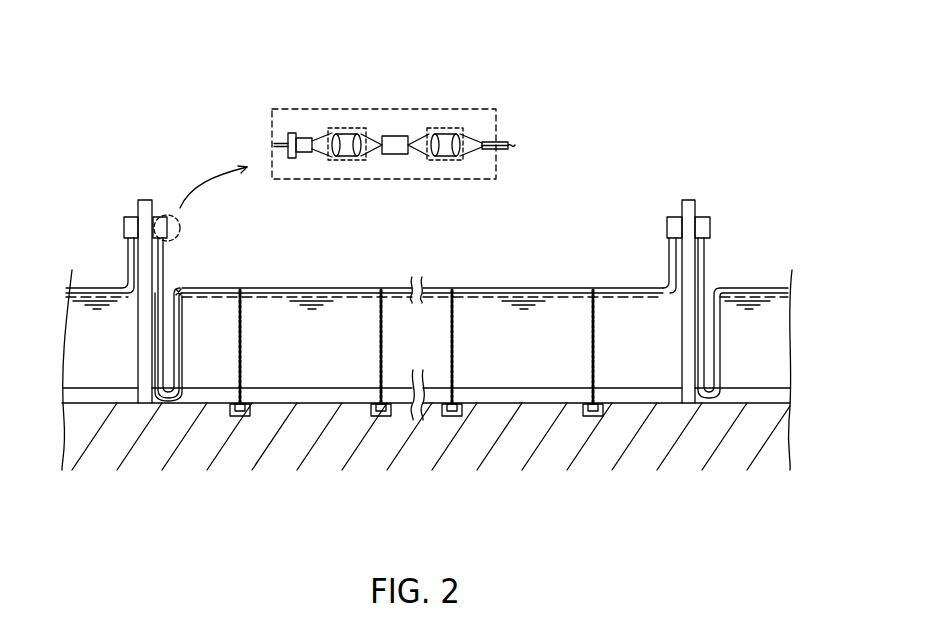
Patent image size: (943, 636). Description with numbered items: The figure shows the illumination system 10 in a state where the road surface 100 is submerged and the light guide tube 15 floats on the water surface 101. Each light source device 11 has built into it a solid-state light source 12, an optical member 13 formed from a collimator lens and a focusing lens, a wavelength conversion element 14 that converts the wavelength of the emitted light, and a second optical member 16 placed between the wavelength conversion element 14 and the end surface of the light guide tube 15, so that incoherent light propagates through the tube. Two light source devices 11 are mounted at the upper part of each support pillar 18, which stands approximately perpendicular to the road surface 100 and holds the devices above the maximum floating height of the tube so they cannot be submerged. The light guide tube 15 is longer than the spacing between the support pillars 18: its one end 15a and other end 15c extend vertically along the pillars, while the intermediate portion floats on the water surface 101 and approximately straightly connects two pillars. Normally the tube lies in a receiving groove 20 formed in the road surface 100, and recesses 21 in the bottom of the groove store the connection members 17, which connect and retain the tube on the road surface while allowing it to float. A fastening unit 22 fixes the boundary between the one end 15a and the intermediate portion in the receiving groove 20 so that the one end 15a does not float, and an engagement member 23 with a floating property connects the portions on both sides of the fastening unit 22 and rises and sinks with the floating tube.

The illumination system 10 is at (732, 73).
The light source device 11 is at (128, 217).
The solid-state light source 12 is at (307, 138).
The optical member 13 is at (348, 128).
The wavelength conversion element 14 is at (395, 136).
The light guide tube 15 is at (507, 142).
The one end 15a is at (146, 398).
The other end 15c is at (668, 252).
The optical member 16 is at (440, 130).
The connection member 17 is at (240, 337).
The support pillar 18 is at (144, 200).
The receiving groove 20 is at (305, 395).
The recess 21 is at (240, 418).
The fastening unit 22 is at (179, 403).
The engagement member 23 is at (177, 288).
The road surface 100 is at (535, 388).
The water surface 101 is at (563, 288).